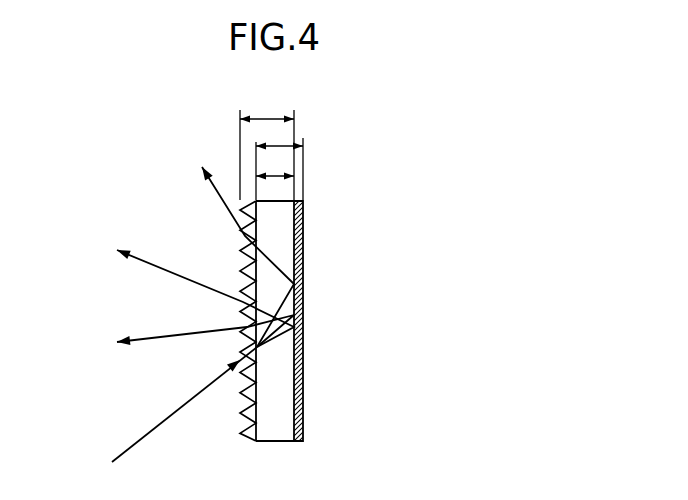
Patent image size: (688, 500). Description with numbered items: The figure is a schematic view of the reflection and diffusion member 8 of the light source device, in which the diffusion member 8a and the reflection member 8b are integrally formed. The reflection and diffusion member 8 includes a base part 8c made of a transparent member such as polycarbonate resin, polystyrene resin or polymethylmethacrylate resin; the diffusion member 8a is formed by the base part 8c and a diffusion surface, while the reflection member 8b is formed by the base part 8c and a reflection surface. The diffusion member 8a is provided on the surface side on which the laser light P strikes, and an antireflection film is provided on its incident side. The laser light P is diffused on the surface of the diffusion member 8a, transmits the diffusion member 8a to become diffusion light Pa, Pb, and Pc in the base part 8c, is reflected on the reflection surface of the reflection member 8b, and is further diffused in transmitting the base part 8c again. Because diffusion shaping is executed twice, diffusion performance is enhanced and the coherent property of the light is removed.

The reflection and diffusion member 8 is at (355, 82).
The diffusion member 8a is at (266, 118).
The reflection member 8b is at (277, 143).
The base part 8c is at (273, 172).
The laser light P is at (124, 452).
The diffusion light Pa is at (214, 187).
The diffusion light Pb is at (172, 272).
The diffusion light Pc is at (145, 339).